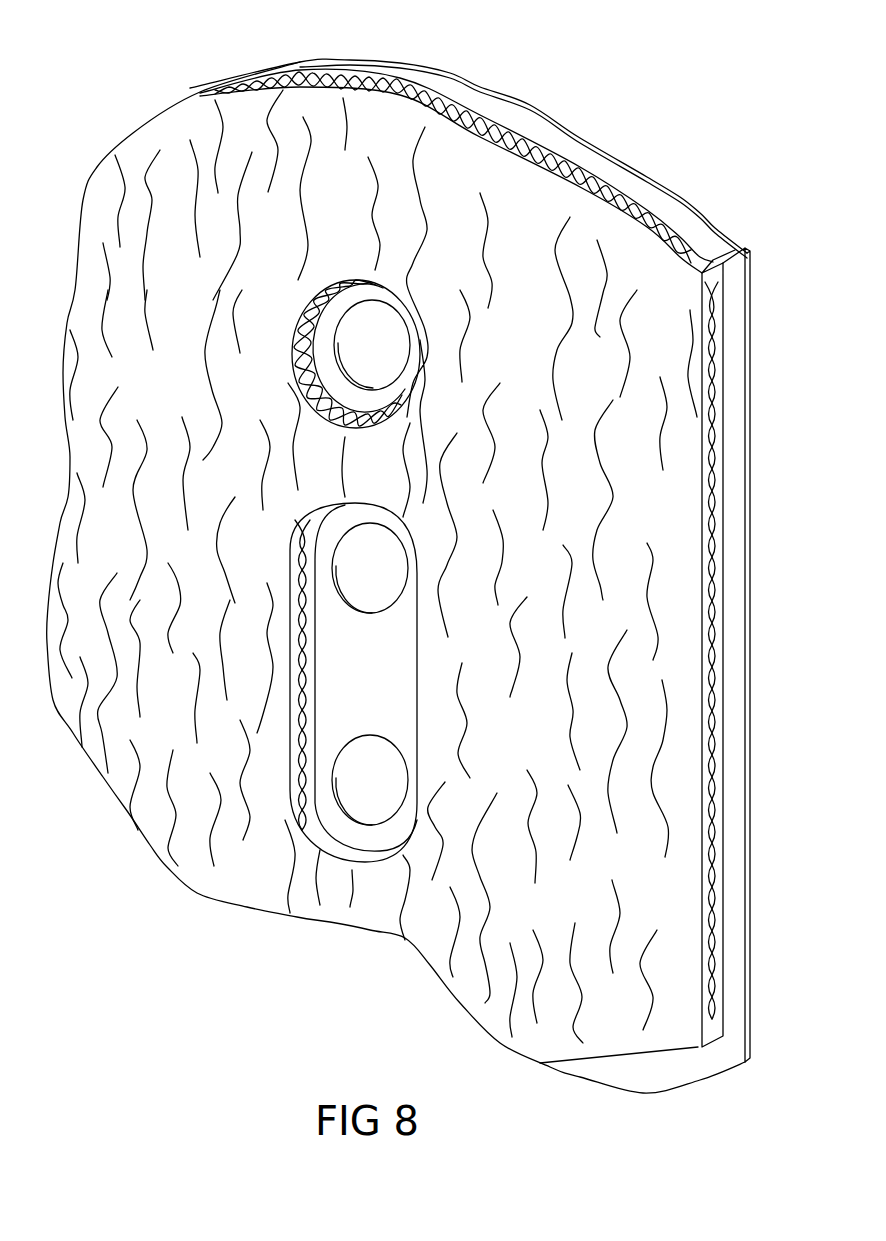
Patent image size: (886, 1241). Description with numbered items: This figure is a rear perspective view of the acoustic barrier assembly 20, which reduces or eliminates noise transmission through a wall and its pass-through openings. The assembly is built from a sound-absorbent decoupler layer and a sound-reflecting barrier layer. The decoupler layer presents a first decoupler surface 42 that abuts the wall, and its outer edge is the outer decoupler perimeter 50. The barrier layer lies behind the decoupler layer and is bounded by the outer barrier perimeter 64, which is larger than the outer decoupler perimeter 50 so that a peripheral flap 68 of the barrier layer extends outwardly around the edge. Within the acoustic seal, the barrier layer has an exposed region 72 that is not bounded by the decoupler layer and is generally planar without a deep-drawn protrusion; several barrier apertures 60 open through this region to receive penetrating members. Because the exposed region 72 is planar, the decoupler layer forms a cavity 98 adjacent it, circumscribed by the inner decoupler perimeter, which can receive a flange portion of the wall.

The acoustic barrier assembly 20 is at (72, 96).
The first decoupler surface 42 is at (252, 876).
The outer decoupler perimeter 50 is at (712, 930).
The barrier aperture 60 is at (356, 350).
The outer barrier perimeter 64 is at (749, 407).
The peripheral flap 68 is at (650, 185).
The exposed region 72 is at (342, 300).
The cavity 98 is at (335, 698).